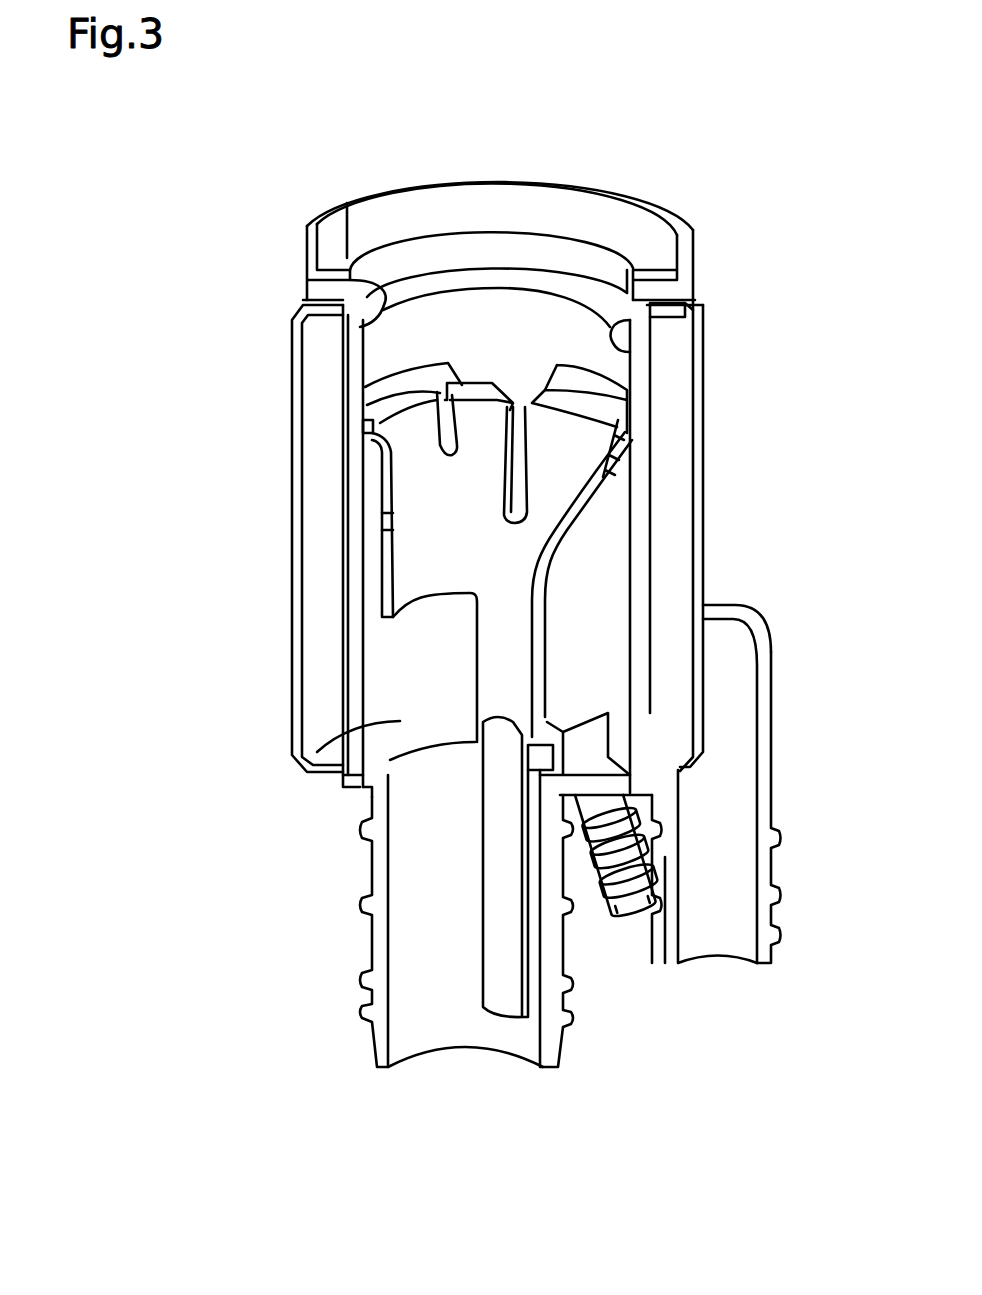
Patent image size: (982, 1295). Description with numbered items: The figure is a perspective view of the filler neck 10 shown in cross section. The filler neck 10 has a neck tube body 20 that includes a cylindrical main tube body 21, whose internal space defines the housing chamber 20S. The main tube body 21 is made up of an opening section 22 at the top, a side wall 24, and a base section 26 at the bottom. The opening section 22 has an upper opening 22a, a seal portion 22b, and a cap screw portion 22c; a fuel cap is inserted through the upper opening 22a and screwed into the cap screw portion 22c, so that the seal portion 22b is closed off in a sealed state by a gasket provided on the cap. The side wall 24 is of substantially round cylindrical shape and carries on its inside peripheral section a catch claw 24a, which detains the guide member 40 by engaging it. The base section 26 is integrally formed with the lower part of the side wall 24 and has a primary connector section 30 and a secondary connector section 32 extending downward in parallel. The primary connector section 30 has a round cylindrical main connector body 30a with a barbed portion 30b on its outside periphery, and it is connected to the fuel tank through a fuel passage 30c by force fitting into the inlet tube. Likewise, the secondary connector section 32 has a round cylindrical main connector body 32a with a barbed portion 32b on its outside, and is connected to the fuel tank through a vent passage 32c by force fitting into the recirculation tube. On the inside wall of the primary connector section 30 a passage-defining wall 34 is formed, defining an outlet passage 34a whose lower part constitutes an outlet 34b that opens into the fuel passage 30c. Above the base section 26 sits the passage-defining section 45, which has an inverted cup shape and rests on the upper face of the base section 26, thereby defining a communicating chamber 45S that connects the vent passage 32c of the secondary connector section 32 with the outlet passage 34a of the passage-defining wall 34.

The filler neck 10 is at (749, 173).
The neck tube body 20 is at (640, 400).
The housing chamber 20S is at (570, 340).
The main tube body 21 is at (337, 440).
The opening section 22 is at (215, 213).
The upper opening 22a is at (413, 237).
The seal portion 22b is at (353, 290).
The cap screw portion 22c is at (362, 314).
The side wall 24 is at (343, 501).
The catch claw 24a is at (352, 407).
The base section 26 is at (368, 787).
The primary connector section 30 is at (258, 863).
The main connector body 30a is at (377, 877).
The barbed portion 30b is at (370, 922).
The fuel passage 30c is at (437, 1013).
The secondary connector section 32 is at (690, 1035).
The main connector body 32a is at (650, 925).
The barbed portion 32b is at (607, 900).
The vent passage 32c is at (617, 850).
The passage-defining wall 34 is at (503, 983).
The outlet passage 34a is at (535, 953).
The outlet 34b is at (533, 1017).
The guide member 40 is at (563, 500).
The passage-defining section 45 is at (560, 720).
The communicating chamber 45S is at (565, 740).